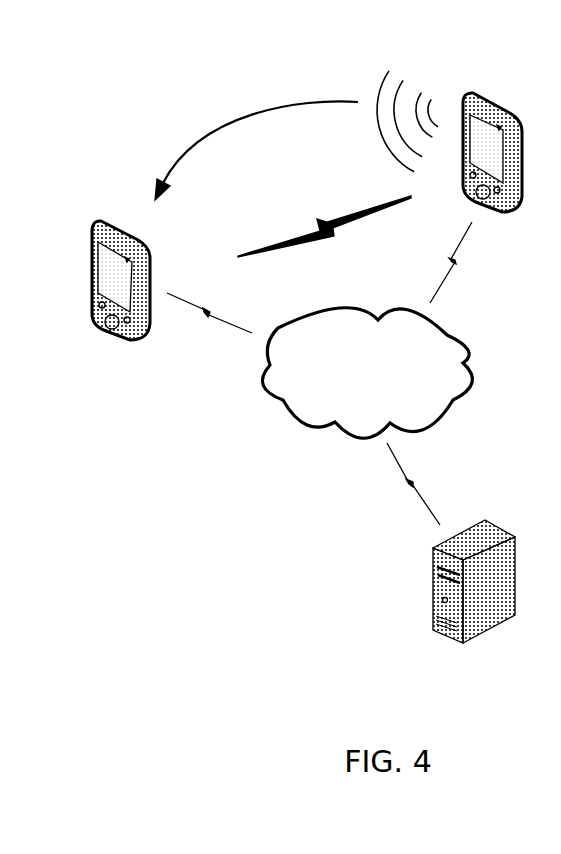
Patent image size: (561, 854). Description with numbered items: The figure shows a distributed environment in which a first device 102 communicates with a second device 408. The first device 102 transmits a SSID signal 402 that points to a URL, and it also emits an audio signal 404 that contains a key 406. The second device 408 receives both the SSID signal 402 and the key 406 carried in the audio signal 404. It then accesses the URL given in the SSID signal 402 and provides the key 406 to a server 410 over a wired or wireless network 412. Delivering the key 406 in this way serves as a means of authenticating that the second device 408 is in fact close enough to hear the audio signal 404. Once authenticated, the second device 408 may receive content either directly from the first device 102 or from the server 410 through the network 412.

The first device 102 is at (479, 96).
The SSID signal 402 is at (326, 217).
The audio signal 404 is at (388, 75).
The key 406 is at (202, 133).
The second device 408 is at (100, 224).
The server 410 is at (510, 535).
The network 412 is at (353, 308).